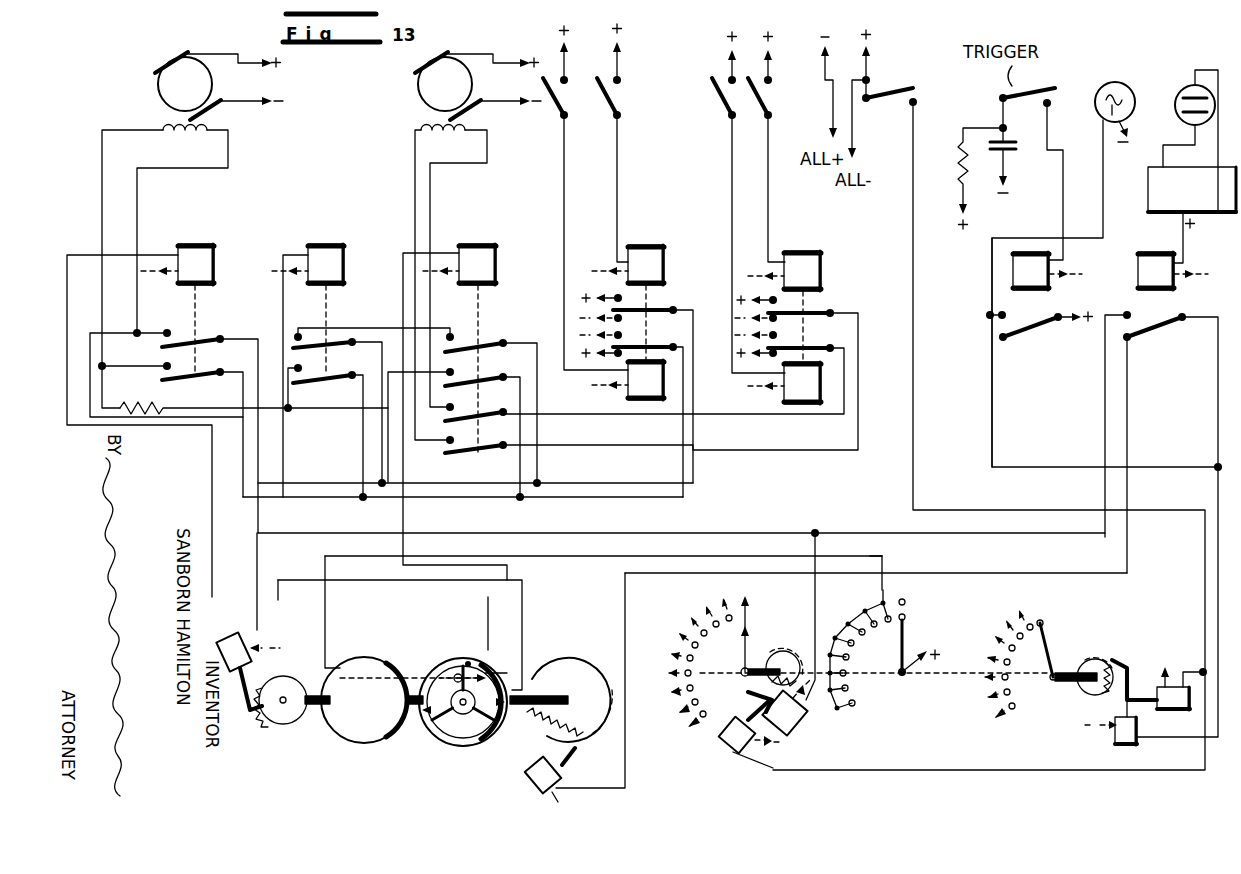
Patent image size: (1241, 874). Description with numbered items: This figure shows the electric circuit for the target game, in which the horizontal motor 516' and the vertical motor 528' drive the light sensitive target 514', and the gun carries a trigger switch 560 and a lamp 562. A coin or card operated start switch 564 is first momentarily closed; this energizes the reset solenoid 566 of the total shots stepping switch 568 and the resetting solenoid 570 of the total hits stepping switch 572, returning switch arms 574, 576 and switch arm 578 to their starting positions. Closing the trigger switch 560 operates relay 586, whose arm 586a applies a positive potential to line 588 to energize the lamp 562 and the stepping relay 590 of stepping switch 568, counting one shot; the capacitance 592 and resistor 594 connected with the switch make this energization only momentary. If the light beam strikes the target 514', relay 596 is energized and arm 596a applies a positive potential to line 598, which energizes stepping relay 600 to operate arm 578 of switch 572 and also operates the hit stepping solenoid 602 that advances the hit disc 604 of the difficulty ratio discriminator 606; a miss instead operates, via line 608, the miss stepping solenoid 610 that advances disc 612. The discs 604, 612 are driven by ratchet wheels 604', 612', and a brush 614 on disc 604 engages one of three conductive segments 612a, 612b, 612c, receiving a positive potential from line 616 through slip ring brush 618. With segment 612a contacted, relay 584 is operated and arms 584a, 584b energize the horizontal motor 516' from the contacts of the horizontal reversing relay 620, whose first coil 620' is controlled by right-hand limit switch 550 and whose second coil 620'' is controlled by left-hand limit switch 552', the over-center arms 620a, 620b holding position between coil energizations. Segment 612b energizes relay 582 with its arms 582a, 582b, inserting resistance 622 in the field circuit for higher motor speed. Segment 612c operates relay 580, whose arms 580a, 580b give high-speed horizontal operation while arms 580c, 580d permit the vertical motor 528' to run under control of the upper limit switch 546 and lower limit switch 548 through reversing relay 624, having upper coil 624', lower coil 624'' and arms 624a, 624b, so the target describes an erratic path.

The horizontal motor 516' is at (180, 209).
The vertical motor 528' is at (448, 246).
The horizontal right-hand limit switch 550 is at (621, 103).
The left-hand horizontal limit switch 552' is at (585, 198).
The upper limit switch 546 is at (722, 103).
The lower limit switch 548 is at (771, 96).
The start switch 564 is at (904, 88).
The trigger switch 560 is at (1048, 86).
The capacitance 592 is at (1010, 152).
The resistor 594 is at (960, 160).
The lamp 562 is at (1122, 86).
The light sensitive target 514' is at (1194, 154).
The relay 584 is at (171, 244).
The relay 582 is at (305, 244).
The relay 580 is at (456, 244).
The horizontal reversing relay 620 is at (637, 351).
The first coil 620' is at (655, 265).
The second coil 620'' is at (610, 382).
The arm 620a is at (655, 310).
The arm 620b is at (650, 345).
The reversing relay 624 is at (689, 328).
The upper coil 624' is at (811, 271).
The lower coil 624'' is at (764, 383).
The relay contact 624a is at (680, 373).
The relay contact 624b is at (673, 372).
The relay 586 is at (1086, 286).
The relay 596 is at (1181, 271).
The arm 584a is at (192, 336).
The arm 584b is at (170, 429).
The resistance 622 is at (150, 404).
The relay contact 582a is at (371, 407).
The relay contact 582b is at (338, 432).
The arm 580a is at (474, 345).
The arm 580b is at (474, 382).
The arm 580c is at (474, 416).
The arm 580d is at (460, 450).
The line 616 is at (872, 560).
The line 588 is at (990, 292).
The arm 586a is at (1010, 342).
The line 598 is at (1105, 378).
The line 608 is at (1131, 392).
The arm 596a is at (1150, 336).
The stepping solenoid 602 is at (250, 646).
The ratchet wheel 604' is at (269, 723).
The slip ring brush 618 is at (312, 733).
The hit disc 604 is at (399, 677).
The disc 612 is at (456, 701).
The conductive segment 612a is at (467, 662).
The conductive segment 612b is at (472, 742).
The conductive segment 612c is at (453, 736).
The difficulty ratio discriminator 606 is at (432, 636).
The brush 614 is at (412, 682).
The ratchet wheel 612' is at (482, 688).
The miss stepping solenoid 610 is at (540, 762).
The switch arm 578 is at (748, 645).
The total hits stepping switch 572 is at (658, 648).
The stepping relay 600 is at (806, 740).
The resetting solenoid 570 is at (728, 738).
The switch arm 576 is at (893, 660).
The switch arm 574 is at (1050, 650).
The total shots stepping switch 568 is at (1090, 706).
The reset solenoid 566 is at (1190, 710).
The stepping relay 590 is at (1113, 737).